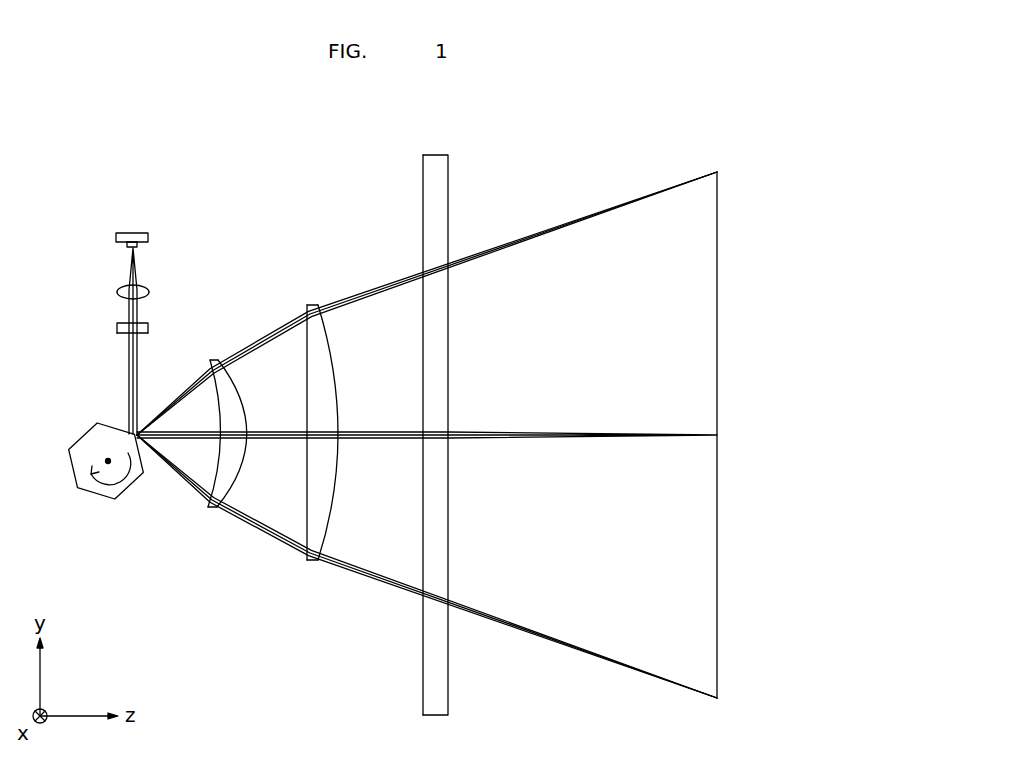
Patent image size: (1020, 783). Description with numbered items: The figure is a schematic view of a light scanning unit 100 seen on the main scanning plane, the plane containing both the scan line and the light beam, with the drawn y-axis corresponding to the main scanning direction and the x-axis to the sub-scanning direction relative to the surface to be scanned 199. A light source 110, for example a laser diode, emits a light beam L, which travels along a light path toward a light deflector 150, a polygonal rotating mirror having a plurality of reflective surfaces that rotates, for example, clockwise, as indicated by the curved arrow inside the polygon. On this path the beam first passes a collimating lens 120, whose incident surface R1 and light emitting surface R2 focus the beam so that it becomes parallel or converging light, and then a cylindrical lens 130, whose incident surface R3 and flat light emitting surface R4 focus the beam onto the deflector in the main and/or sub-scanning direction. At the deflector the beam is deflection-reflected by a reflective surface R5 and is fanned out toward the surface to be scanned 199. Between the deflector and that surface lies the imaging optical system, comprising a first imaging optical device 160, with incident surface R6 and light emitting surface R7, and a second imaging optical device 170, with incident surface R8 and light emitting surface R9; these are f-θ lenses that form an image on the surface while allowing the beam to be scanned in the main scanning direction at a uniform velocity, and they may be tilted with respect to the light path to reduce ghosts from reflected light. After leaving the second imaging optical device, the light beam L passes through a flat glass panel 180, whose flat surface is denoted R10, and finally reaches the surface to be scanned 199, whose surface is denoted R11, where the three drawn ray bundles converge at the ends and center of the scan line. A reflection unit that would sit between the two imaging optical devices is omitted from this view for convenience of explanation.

The light scanning unit 100 is at (644, 128).
The light source 110 is at (117, 244).
The collimating lens 120 is at (117, 292).
The cylindrical lens 130 is at (117, 330).
The light deflector 150 is at (72, 446).
The first imaging optical device 160 is at (210, 508).
The second imaging optical device 170 is at (312, 561).
The flat glass panel 180 is at (448, 212).
The surface to be scanned 199 is at (717, 307).
The incident surface of collimating lens R1 is at (128, 283).
The light emitting surface of collimating lens R2 is at (120, 298).
The incident surface of cylindrical lens R3 is at (142, 323).
The light emitting surface of cylindrical lens R4 is at (142, 333).
The reflective surface of light deflector R5 is at (144, 468).
The incident surface of first imaging optical device R6 is at (215, 440).
The light emitting surface of first imaging optical device R7 is at (248, 437).
The incident surface of second imaging optical device R8 is at (305, 433).
The light emitting surface of second imaging optical device R9 is at (340, 433).
The flat-panel glass surface R10 is at (423, 212).
The surface to be scanned R11 is at (717, 388).
The light beam L is at (128, 383).